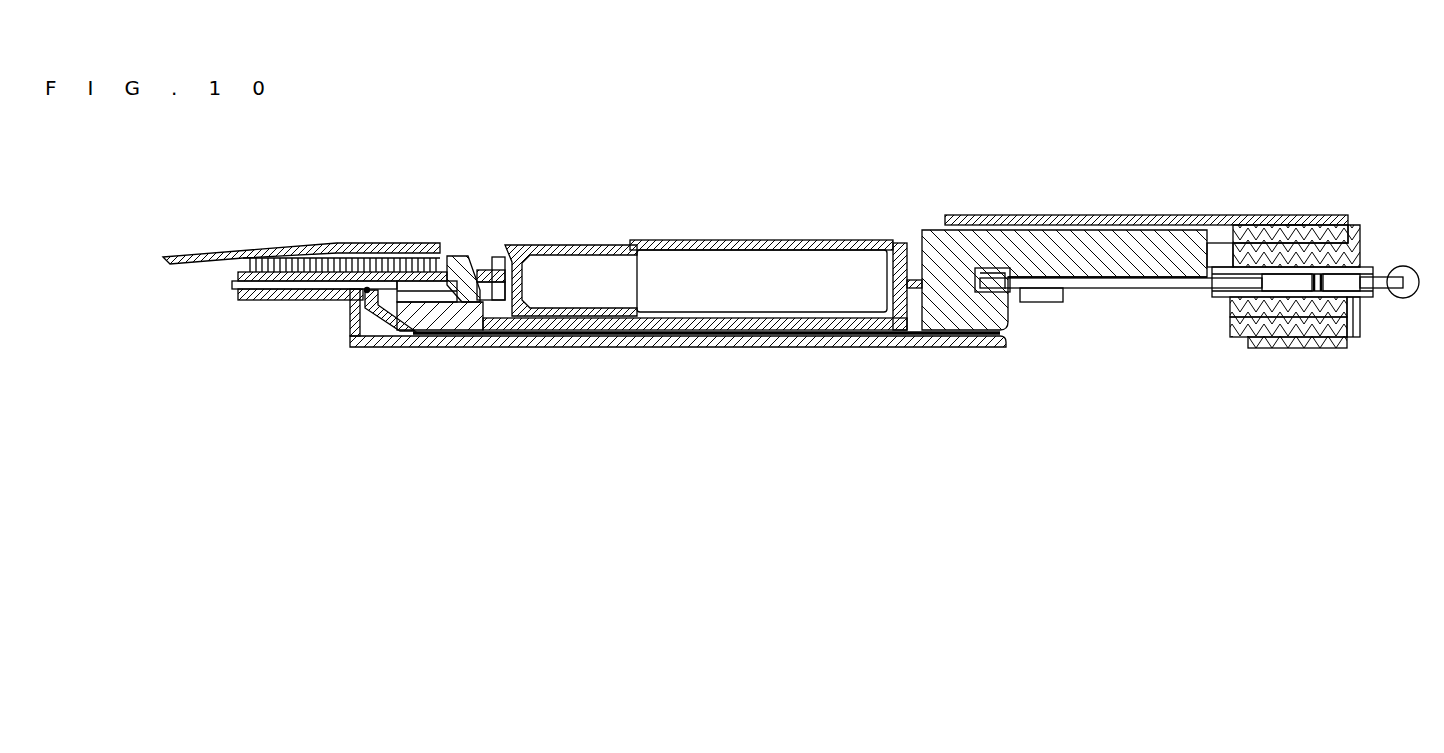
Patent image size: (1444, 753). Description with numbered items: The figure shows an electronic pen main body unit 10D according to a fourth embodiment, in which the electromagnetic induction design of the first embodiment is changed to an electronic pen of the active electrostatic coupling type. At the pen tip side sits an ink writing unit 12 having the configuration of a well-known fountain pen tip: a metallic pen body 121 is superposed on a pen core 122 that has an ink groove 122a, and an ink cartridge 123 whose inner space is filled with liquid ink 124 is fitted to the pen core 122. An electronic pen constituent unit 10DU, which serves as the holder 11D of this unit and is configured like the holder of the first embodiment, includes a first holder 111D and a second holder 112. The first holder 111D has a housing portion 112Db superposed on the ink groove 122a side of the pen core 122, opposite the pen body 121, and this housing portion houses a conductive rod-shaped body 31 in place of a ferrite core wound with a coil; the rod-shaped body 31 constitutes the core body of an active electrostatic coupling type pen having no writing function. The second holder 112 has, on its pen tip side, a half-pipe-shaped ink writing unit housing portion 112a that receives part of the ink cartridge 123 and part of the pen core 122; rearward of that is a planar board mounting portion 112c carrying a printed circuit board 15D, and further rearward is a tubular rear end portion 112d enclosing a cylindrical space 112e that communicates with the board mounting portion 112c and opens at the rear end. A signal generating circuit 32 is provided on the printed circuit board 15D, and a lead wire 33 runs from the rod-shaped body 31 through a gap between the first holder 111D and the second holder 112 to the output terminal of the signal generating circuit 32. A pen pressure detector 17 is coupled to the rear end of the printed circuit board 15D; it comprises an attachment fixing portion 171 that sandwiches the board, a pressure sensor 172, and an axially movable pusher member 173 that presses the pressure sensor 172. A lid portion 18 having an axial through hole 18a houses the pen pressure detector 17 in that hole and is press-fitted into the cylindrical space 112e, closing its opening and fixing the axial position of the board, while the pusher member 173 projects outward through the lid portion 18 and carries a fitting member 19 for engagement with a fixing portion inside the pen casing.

The electronic pen main body unit 10D is at (861, 184).
The electronic pen constituent unit 10DU is at (722, 358).
The housing 11D is at (744, 316).
The first holder 111D is at (905, 342).
The second holder 112 is at (965, 315).
The ink writing unit housing portion 112a is at (915, 292).
The board mounting portion 112c is at (1130, 273).
The rear end portion 112d is at (1327, 233).
The cylindrical space 112e is at (1220, 257).
The bottom portion 112Db is at (307, 298).
The ink writing unit 12 is at (528, 223).
The pen body 121 is at (338, 246).
The pen core 122 is at (463, 254).
The ink groove 122a is at (367, 289).
The ink cartridge 123 is at (692, 247).
The liquid ink 124 is at (697, 275).
The printed circuit board 15D is at (1113, 285).
The pen pressure detector 17 is at (1312, 359).
The attachment fixing portion 171 is at (1265, 290).
The pressure sensor 172 is at (1318, 319).
The pusher member 173 is at (1363, 338).
The lid portion 18 is at (1357, 242).
The through hole 18a is at (1295, 233).
The fitting member 19 is at (1403, 298).
The conductive rod-shaped body 31 is at (232, 284).
The signal generating circuit 32 is at (1043, 294).
The lead wire 33 is at (380, 331).